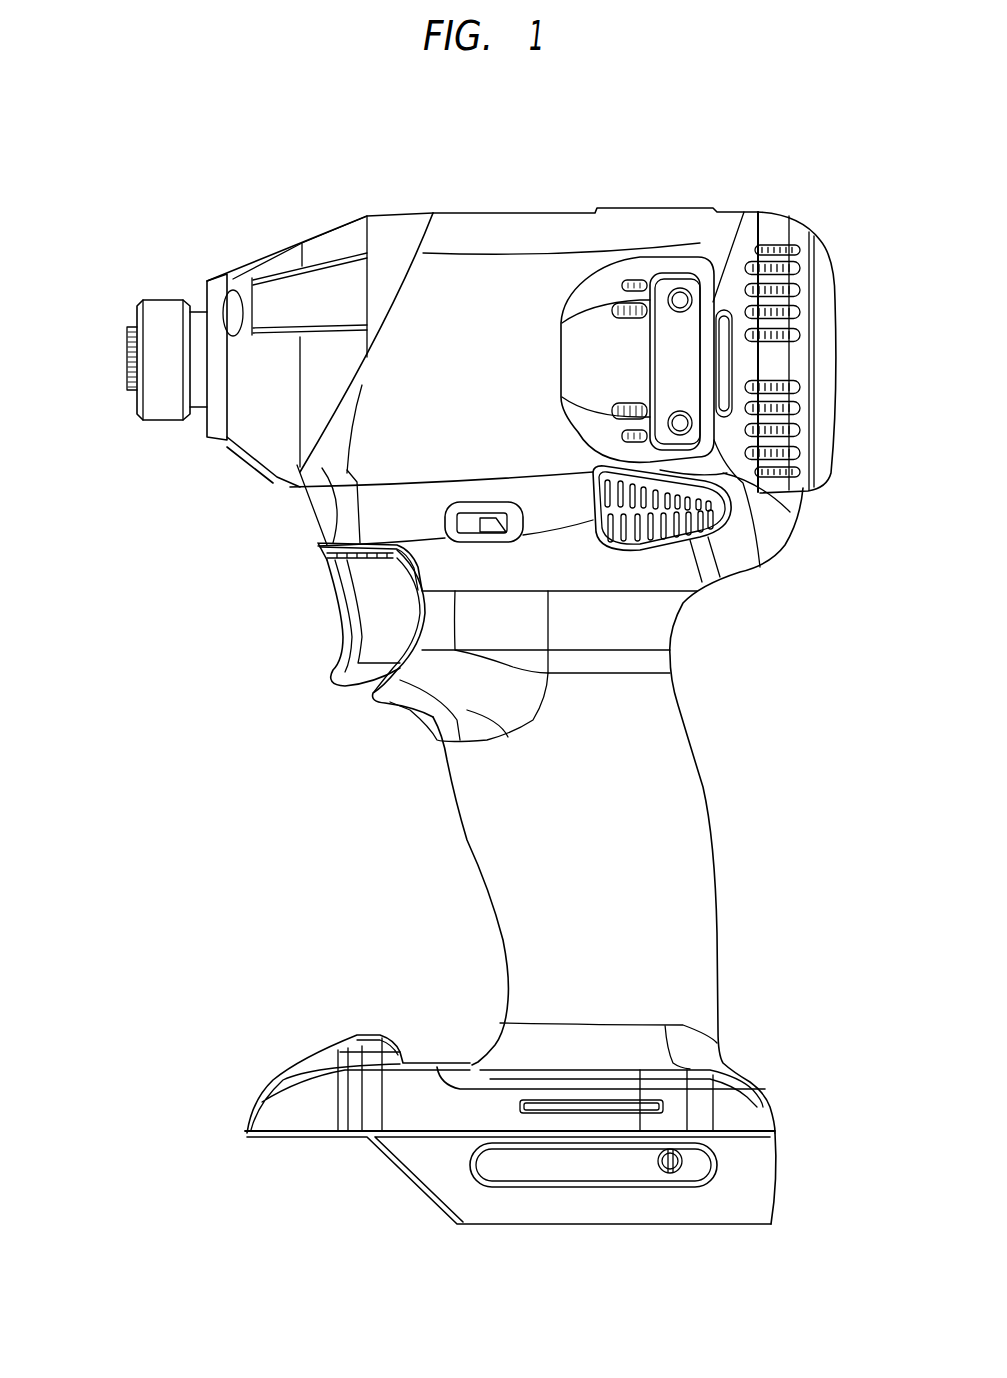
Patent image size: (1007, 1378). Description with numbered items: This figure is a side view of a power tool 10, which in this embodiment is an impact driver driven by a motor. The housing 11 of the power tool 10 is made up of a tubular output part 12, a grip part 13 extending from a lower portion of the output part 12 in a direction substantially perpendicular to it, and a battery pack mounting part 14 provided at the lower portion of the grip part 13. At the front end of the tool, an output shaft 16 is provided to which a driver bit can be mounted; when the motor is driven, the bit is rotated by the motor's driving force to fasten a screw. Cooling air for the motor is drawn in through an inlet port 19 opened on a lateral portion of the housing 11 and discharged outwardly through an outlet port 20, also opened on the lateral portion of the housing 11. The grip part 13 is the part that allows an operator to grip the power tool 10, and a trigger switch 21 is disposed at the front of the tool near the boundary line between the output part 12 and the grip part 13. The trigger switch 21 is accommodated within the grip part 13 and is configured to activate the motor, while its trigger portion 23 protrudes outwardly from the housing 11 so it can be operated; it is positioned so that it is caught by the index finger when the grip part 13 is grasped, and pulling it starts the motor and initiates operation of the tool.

The power tool 10 is at (768, 155).
The housing 11 is at (607, 208).
The output part 12 is at (466, 212).
The grip part 13 is at (713, 828).
The battery pack mounting part 14 is at (303, 1062).
The output shaft 16 is at (128, 360).
The inlet port 19 is at (739, 483).
The outlet port 20 is at (795, 240).
The trigger switch 21 is at (333, 638).
The trigger portion 23 is at (326, 630).